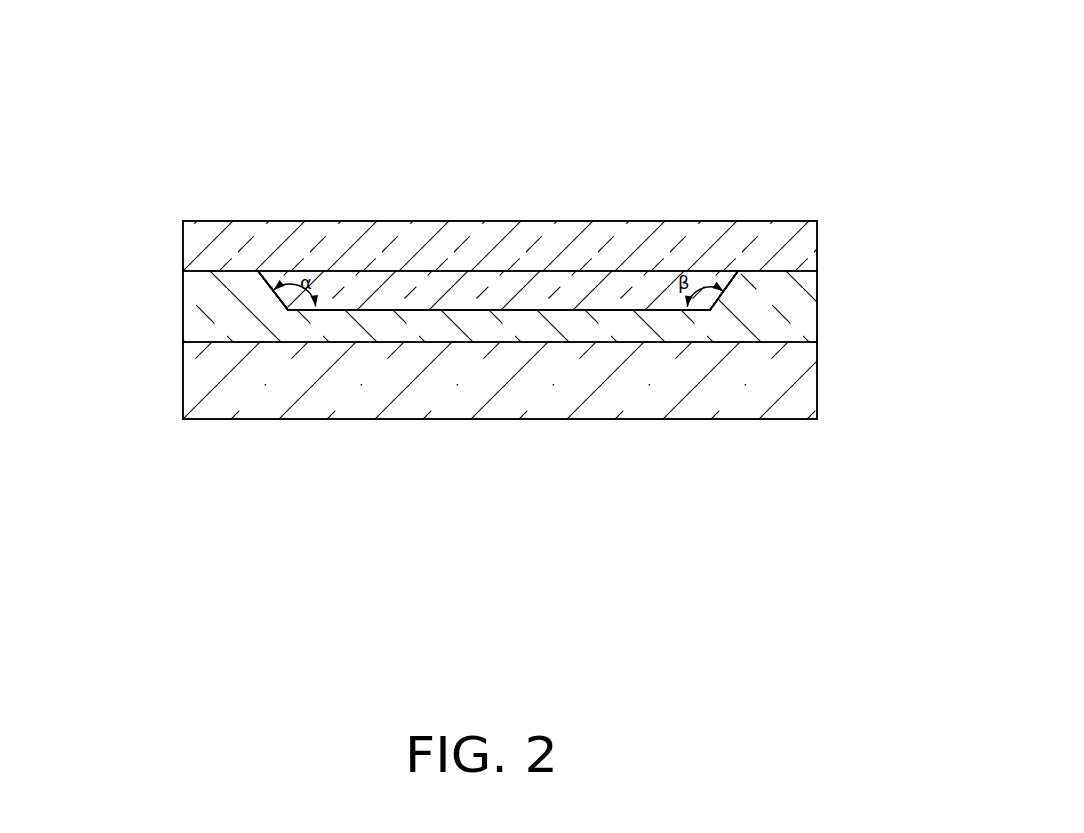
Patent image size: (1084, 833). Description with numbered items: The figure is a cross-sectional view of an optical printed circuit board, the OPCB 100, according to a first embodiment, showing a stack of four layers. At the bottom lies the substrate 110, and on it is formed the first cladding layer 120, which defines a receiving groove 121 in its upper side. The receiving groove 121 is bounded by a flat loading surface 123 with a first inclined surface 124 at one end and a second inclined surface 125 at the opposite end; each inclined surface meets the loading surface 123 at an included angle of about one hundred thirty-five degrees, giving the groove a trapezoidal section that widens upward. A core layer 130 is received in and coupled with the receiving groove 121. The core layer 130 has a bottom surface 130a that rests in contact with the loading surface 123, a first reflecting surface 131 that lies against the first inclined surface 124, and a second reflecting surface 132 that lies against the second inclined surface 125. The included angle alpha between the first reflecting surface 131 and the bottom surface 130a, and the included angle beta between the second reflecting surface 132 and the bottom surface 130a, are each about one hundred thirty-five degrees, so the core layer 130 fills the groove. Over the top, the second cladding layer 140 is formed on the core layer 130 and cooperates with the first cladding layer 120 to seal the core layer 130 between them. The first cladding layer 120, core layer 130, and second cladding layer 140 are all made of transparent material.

The OPCB 100 is at (500, 87).
The substrate 110 is at (233, 395).
The first cladding layer 120 is at (227, 315).
The receiving groove 121 is at (770, 490).
The loading surface 123 is at (499, 311).
The first inclined surface 124 is at (280, 310).
The second inclined surface 125 is at (723, 300).
The core layer 130 is at (510, 285).
The bottom surface 130a is at (396, 308).
The first reflecting surface 131 is at (272, 277).
The second reflecting surface 132 is at (727, 273).
The second cladding layer 140 is at (793, 232).